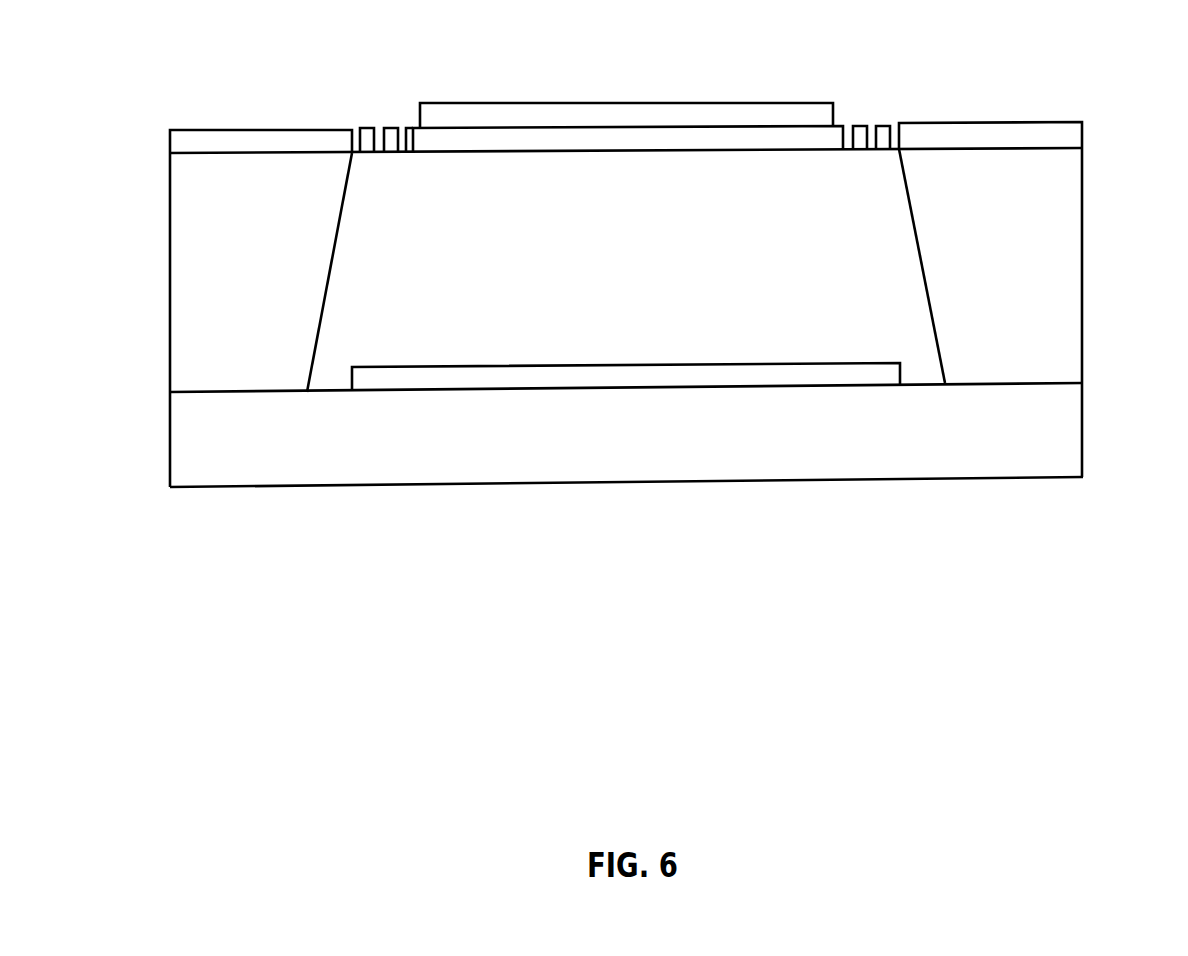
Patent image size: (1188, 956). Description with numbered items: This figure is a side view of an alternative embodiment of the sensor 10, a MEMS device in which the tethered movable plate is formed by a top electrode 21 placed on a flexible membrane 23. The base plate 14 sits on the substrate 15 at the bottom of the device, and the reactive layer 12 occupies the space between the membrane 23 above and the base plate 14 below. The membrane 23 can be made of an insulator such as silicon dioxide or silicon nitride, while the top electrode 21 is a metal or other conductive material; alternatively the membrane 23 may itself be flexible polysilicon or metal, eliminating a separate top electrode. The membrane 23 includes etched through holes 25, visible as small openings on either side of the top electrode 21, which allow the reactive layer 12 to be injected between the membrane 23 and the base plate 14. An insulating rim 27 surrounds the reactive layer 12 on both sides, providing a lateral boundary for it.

The sensor 10 is at (366, 593).
The reactive layer 12 is at (578, 335).
The base plate 14 is at (857, 373).
The substrate 15 is at (195, 440).
The top electrode 21 is at (697, 103).
The flexible membrane 23 is at (833, 132).
The etched through holes 25 is at (358, 130).
The insulating rim 27 is at (192, 250).